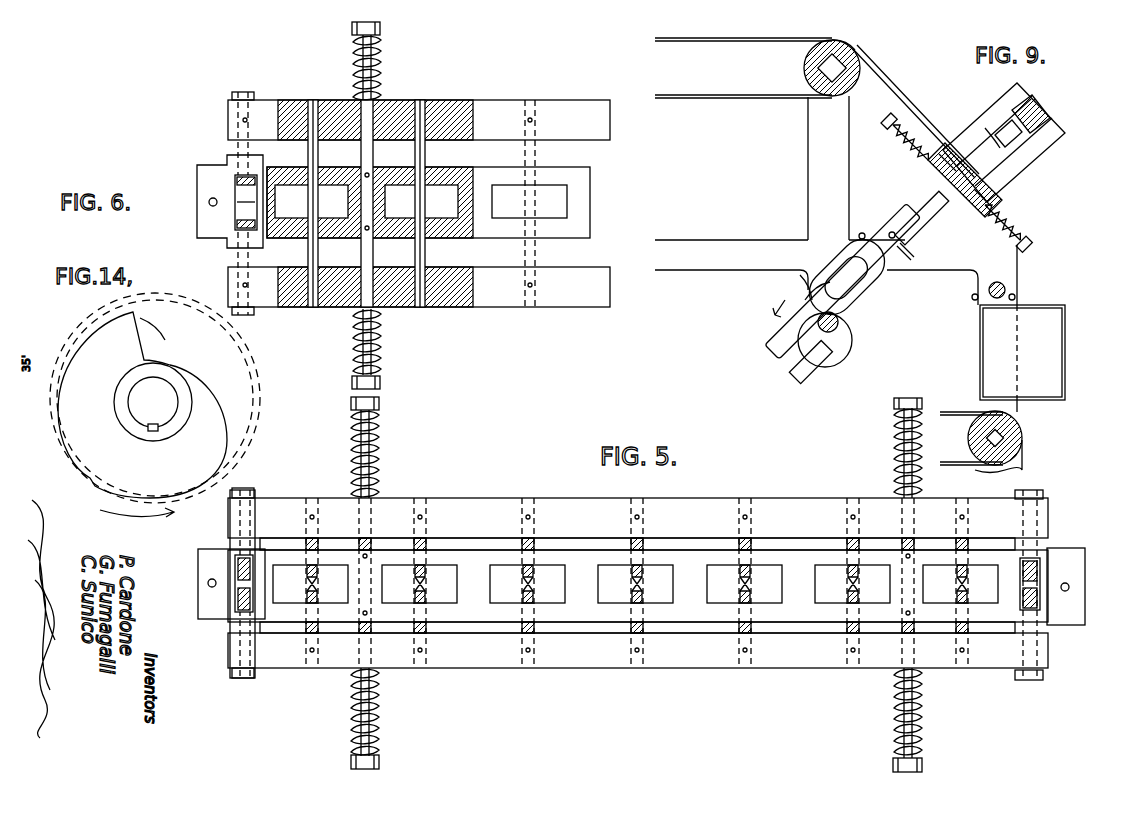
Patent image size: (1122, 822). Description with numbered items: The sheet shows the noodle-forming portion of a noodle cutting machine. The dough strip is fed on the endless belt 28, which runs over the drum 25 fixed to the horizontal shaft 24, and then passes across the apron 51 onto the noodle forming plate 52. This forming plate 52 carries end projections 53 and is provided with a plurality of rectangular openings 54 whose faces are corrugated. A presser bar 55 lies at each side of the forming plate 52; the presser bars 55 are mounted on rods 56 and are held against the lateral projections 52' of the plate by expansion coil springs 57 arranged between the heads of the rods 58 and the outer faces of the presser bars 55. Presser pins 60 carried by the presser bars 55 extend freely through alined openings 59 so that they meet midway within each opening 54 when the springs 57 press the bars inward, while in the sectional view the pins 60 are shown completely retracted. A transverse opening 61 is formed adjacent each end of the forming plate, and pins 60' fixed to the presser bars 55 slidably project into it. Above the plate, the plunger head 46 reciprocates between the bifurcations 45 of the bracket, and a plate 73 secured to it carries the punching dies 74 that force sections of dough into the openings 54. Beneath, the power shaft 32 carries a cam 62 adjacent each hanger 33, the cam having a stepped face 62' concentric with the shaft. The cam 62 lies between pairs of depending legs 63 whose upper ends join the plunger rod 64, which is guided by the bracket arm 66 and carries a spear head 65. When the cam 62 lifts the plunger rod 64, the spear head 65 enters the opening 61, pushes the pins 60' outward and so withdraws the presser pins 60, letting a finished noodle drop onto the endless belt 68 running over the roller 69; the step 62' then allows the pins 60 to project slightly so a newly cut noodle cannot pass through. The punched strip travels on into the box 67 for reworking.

In FIG. 9, the horizontal shaft 24 is at (852, 46).
In FIG. 9, the drum 25 is at (804, 66).
In FIG. 9, the endless belt 28 is at (728, 98).
In FIG. 9, the power shaft 32 is at (769, 344).
In FIG. 9, the hanger 33 is at (805, 276).
In FIG. 9, the bifurcations 45 is at (1032, 122).
In FIG. 9, the plunger head 46 is at (1004, 124).
In FIG. 9, the apron 51 is at (905, 115).
In FIG. 6, the noodle forming plate 52 is at (443, 202).
In FIG. 9, the noodle forming plate 52 is at (996, 150).
In FIG. 5, the noodle forming plate 52 is at (638, 586).
In FIG. 5, the lateral projections 52' is at (636, 584).
In FIG. 5, the end projections 53 is at (1062, 560).
In FIG. 6, the openings 54 is at (421, 201).
In FIG. 5, the openings 54 is at (800, 568).
In FIG. 6, the presser bar 55 is at (419, 203).
In FIG. 9, the presser bar 55 is at (930, 165).
In FIG. 5, the presser bar 55 is at (638, 583).
In FIG. 5, the rods 56 is at (893, 448).
In FIG. 6, the expansion coil springs 57 is at (353, 62).
In FIG. 9, the expansion coil springs 57 is at (908, 142).
In FIG. 5, the expansion coil springs 57 is at (350, 450).
In FIG. 6, the heads of the rods 58 is at (350, 28).
In FIG. 9, the heads of the rods 58 is at (887, 124).
In FIG. 5, the heads of the rods 58 is at (318, 398).
In FIG. 6, the alined openings 59 is at (418, 228).
In FIG. 6, the presser pins 60 is at (421, 203).
In FIG. 5, the presser pins 60 is at (637, 583).
In FIG. 6, the pins 60' is at (217, 203).
In FIG. 5, the pins 60' is at (211, 584).
In FIG. 5, the transverse opening 61 is at (1042, 583).
In FIG. 14, the cam 62 is at (155, 405).
In FIG. 9, the cam 62 is at (853, 324).
In FIG. 14, the stepped operating face 62' is at (88, 376).
In FIG. 9, the stepped operating face 62' is at (824, 274).
In FIG. 9, the depending legs 63 is at (822, 368).
In FIG. 9, the plunger rod 64 is at (880, 272).
In FIG. 6, the spear head 65 is at (244, 206).
In FIG. 9, the spear head 65 is at (918, 212).
In FIG. 9, the bracket arm 66 is at (915, 252).
In FIG. 9, the box 67 is at (1018, 341).
In FIG. 9, the endless belt 68 is at (955, 462).
In FIG. 9, the roller 69 is at (1010, 440).
In FIG. 9, the plate 73 is at (1040, 150).
In FIG. 9, the punching dies 74 is at (990, 140).